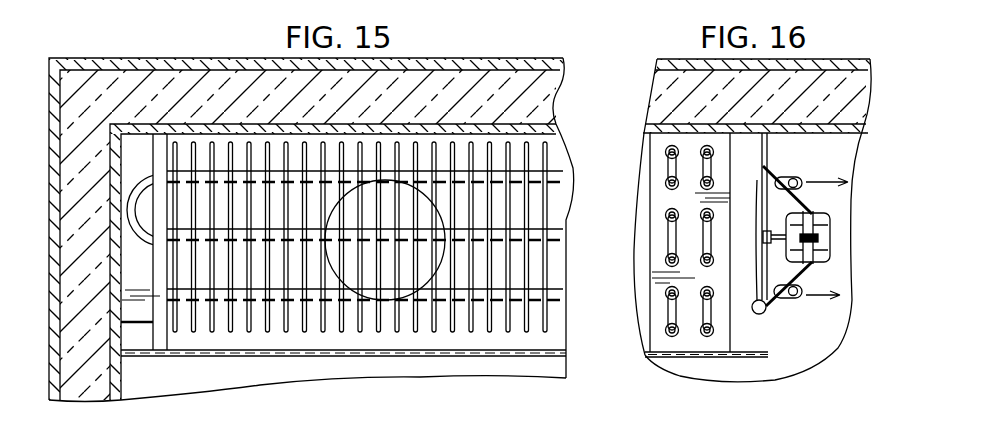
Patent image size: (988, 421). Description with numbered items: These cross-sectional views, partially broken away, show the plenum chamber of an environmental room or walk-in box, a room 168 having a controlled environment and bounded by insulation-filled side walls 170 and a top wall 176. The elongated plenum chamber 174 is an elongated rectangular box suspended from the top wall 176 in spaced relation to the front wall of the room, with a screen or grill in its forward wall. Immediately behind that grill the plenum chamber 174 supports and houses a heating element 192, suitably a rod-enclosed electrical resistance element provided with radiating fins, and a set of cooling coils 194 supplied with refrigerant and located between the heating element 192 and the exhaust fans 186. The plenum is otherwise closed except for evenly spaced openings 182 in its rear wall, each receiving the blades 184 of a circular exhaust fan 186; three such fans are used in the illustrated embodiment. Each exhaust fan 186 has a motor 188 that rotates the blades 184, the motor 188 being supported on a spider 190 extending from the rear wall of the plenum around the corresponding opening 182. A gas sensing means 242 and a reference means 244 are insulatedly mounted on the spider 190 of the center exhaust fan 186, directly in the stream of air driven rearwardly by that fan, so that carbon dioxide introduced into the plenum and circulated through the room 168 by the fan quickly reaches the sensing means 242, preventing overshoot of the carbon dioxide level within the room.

In FIG. 15, the room 168 is at (464, 56).
In FIG. 16, the room 168 is at (812, 56).
In FIG. 15, the side walls 170 is at (50, 66).
In FIG. 15, the plenum chamber 174 is at (280, 358).
In FIG. 16, the plenum chamber 174 is at (700, 360).
In FIG. 15, the top wall 176 is at (199, 60).
In FIG. 16, the top wall 176 is at (674, 60).
In FIG. 16, the openings 182 is at (766, 318).
In FIG. 16, the blades 184 is at (758, 178).
In FIG. 16, the exhaust fans 186 is at (748, 237).
In FIG. 16, the motor 188 is at (832, 214).
In FIG. 16, the spider 190 is at (806, 197).
In FIG. 15, the heating element 192 is at (553, 152).
In FIG. 16, the cooling coils 194 is at (657, 313).
In FIG. 16, the gas sensing means 242 is at (800, 177).
In FIG. 16, the reference means 244 is at (796, 298).